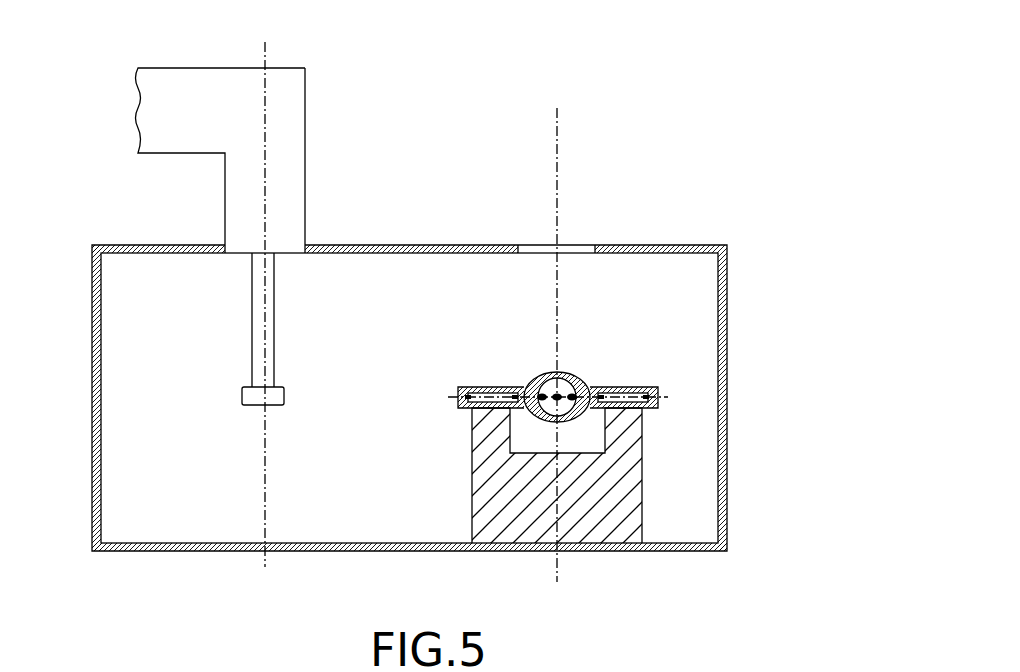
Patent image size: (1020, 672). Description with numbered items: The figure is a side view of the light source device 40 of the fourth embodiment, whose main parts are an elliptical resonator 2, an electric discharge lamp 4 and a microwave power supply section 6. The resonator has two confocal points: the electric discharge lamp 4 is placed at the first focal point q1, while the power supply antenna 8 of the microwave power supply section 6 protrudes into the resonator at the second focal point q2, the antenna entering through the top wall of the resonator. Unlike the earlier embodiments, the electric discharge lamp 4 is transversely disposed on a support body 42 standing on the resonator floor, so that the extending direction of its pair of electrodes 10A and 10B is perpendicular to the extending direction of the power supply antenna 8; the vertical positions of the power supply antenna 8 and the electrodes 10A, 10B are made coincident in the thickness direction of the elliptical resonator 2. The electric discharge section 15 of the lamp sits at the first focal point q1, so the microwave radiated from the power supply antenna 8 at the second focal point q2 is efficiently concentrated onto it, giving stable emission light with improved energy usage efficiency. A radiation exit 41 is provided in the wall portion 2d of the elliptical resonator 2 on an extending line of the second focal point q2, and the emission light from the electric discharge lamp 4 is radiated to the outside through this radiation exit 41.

The elliptical resonator 2 is at (409, 366).
The wall portion 2d is at (430, 246).
The electric discharge lamp 4 is at (646, 375).
The microwave power supply section 6 is at (179, 57).
The power supply antenna 8 is at (242, 393).
The electrode 10A is at (568, 383).
The electrode 10B is at (522, 386).
The electric discharge section 15 is at (546, 380).
The light source device 40 is at (413, 324).
The radiation exit 41 is at (590, 247).
The support body 42 is at (633, 530).
The first focal point q1 is at (558, 330).
The second focal point q2 is at (265, 289).